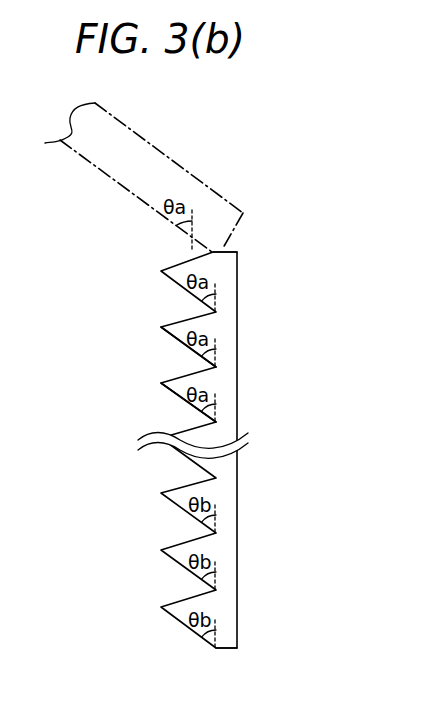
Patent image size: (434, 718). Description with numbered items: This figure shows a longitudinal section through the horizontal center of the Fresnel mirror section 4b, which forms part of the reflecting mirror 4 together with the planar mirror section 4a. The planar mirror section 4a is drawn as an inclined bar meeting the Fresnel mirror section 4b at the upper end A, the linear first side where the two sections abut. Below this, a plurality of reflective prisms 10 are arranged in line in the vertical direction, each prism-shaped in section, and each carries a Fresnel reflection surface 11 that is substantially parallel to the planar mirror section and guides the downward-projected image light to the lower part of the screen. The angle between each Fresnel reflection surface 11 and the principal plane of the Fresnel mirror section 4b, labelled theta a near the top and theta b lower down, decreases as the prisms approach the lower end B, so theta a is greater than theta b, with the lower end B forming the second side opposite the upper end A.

The reflecting mirror 4 is at (212, 197).
The planar mirror section 4a is at (156, 160).
The Fresnel mirror section 4b is at (226, 467).
The reflective prisms 10 is at (178, 332).
The Fresnel reflection surface 11 is at (177, 390).
The upper end A is at (228, 249).
The lower end B is at (228, 652).